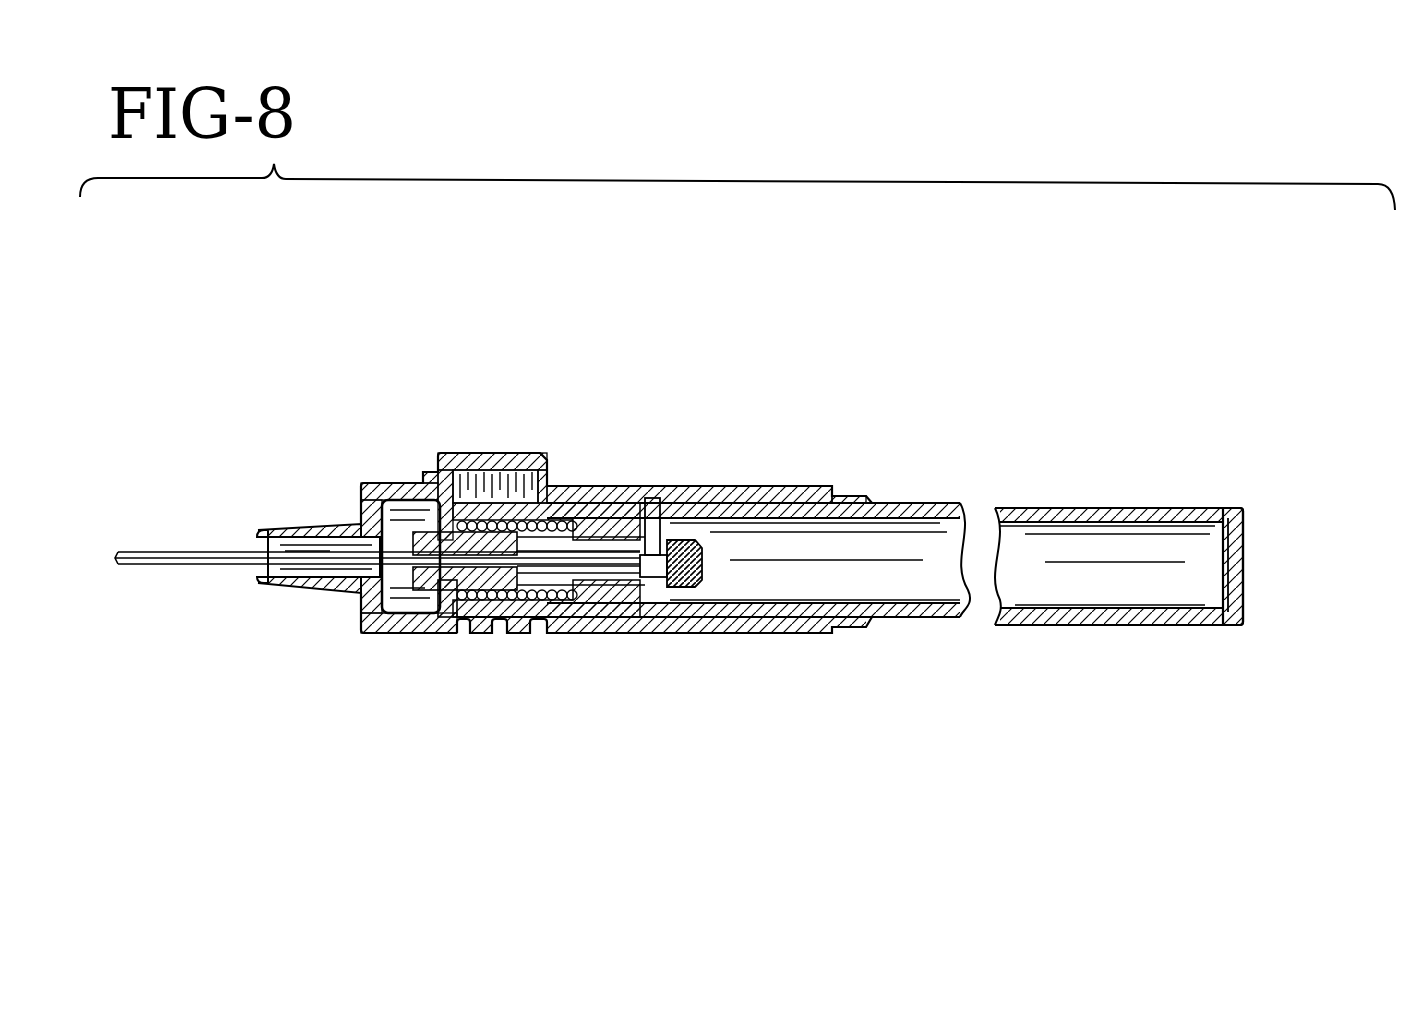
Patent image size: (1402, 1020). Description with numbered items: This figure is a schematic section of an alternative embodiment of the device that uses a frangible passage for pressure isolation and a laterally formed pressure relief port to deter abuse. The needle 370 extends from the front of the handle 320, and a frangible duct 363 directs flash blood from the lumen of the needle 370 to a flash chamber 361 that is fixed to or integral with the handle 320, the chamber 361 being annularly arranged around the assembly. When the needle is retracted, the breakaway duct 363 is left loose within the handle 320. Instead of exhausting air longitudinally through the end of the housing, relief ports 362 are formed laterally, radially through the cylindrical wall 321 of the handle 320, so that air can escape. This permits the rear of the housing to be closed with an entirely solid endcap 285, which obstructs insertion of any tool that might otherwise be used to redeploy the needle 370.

The handle 320 is at (955, 385).
The cylindrical wall 321 is at (1157, 513).
The relief ports 362 is at (1075, 513).
The frangible duct 363 is at (652, 515).
The needle 370 is at (182, 557).
The flash chamber 361 is at (710, 622).
The endcap 285 is at (1245, 598).